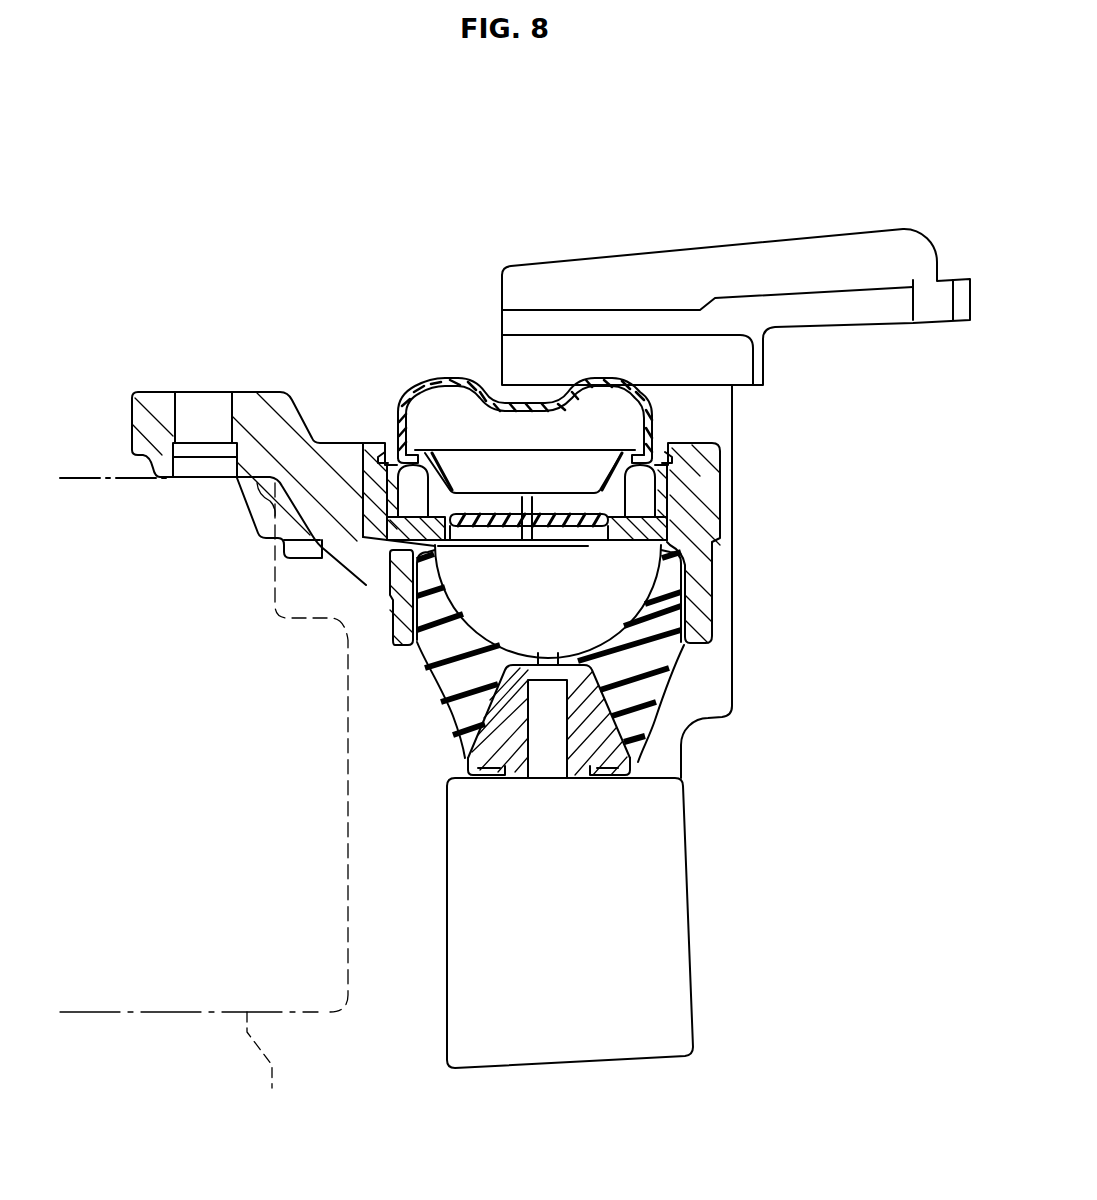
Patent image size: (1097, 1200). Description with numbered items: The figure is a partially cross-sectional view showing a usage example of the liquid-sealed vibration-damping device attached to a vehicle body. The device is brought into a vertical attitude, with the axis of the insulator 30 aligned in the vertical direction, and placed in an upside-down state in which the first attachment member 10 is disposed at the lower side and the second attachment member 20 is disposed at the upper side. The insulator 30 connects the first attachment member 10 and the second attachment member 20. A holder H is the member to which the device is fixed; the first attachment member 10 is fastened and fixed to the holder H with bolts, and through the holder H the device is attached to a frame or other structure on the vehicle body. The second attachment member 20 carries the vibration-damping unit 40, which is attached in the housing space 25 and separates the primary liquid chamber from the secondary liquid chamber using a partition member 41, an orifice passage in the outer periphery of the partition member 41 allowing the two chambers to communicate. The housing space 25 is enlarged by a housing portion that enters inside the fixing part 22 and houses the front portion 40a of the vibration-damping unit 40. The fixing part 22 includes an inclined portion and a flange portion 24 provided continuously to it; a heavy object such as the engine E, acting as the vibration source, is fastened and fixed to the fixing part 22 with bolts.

The first attachment member 10 is at (635, 748).
The second attachment member 20 is at (717, 558).
The fixing part 22 is at (320, 432).
The flange portion 24 is at (158, 405).
The housing space 25 is at (363, 443).
The insulator 30 is at (673, 673).
The vibration-damping unit 40 is at (441, 372).
The front portion of the vibration-damping unit 40a is at (366, 526).
The partition member 41 is at (545, 552).
The holder H is at (787, 231).
The engine E is at (263, 1066).